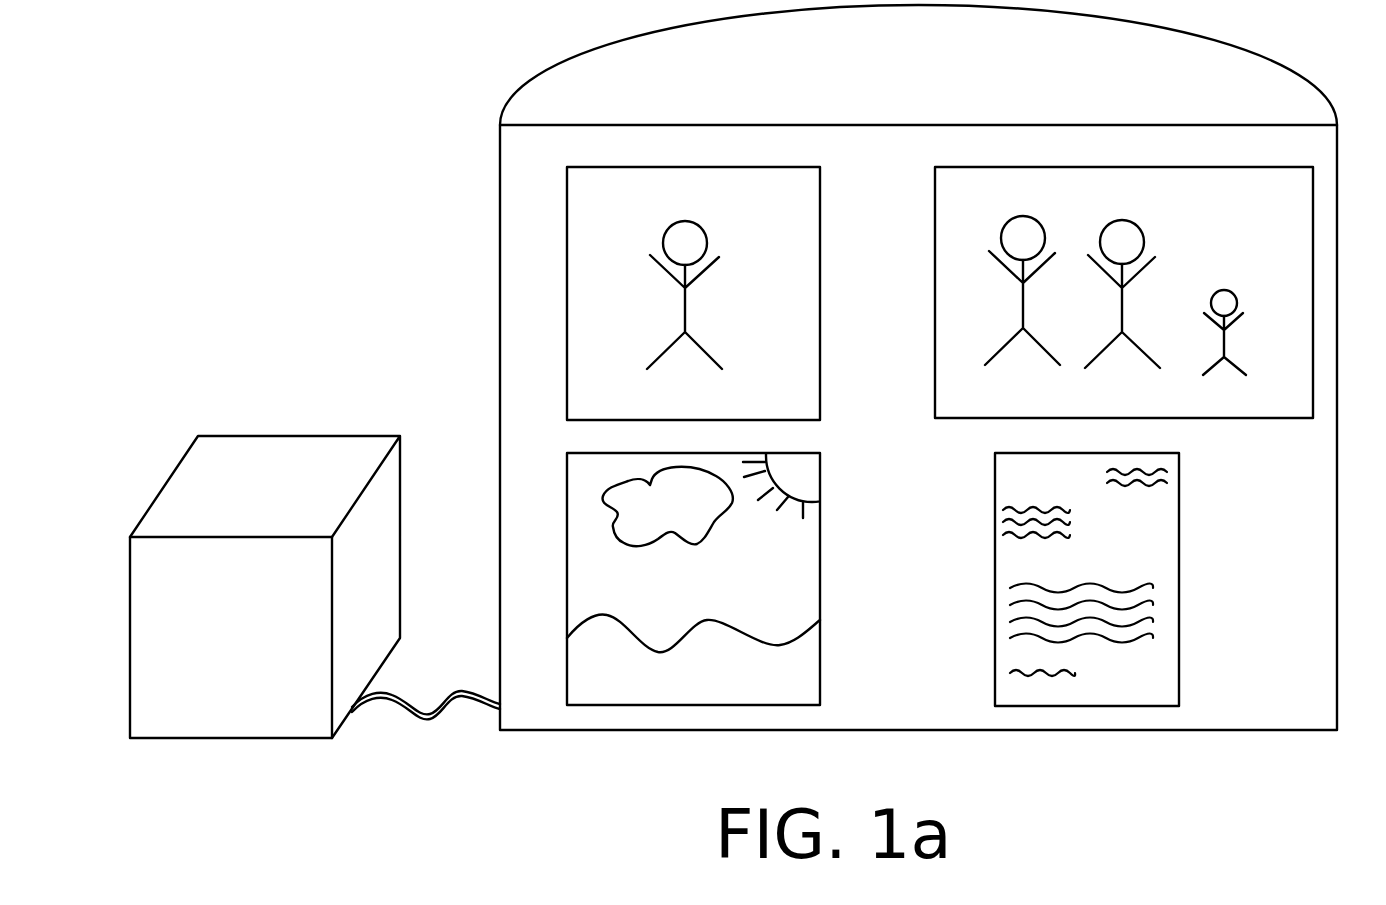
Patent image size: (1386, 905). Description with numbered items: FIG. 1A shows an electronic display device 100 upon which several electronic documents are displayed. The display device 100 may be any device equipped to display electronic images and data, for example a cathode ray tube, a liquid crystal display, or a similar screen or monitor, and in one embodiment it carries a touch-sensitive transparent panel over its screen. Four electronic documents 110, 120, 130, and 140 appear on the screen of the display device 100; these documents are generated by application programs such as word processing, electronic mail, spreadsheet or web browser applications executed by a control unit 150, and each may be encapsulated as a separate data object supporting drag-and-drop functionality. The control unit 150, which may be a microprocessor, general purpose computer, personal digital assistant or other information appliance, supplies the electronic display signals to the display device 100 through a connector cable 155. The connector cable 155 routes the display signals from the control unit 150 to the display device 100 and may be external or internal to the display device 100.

The display device 100 is at (499, 170).
The electronic document 110 is at (803, 414).
The electronic document 120 is at (1298, 412).
The electronic document 130 is at (803, 699).
The electronic document 140 is at (1163, 699).
The control unit 150 is at (321, 729).
The connector cable 155 is at (435, 728).